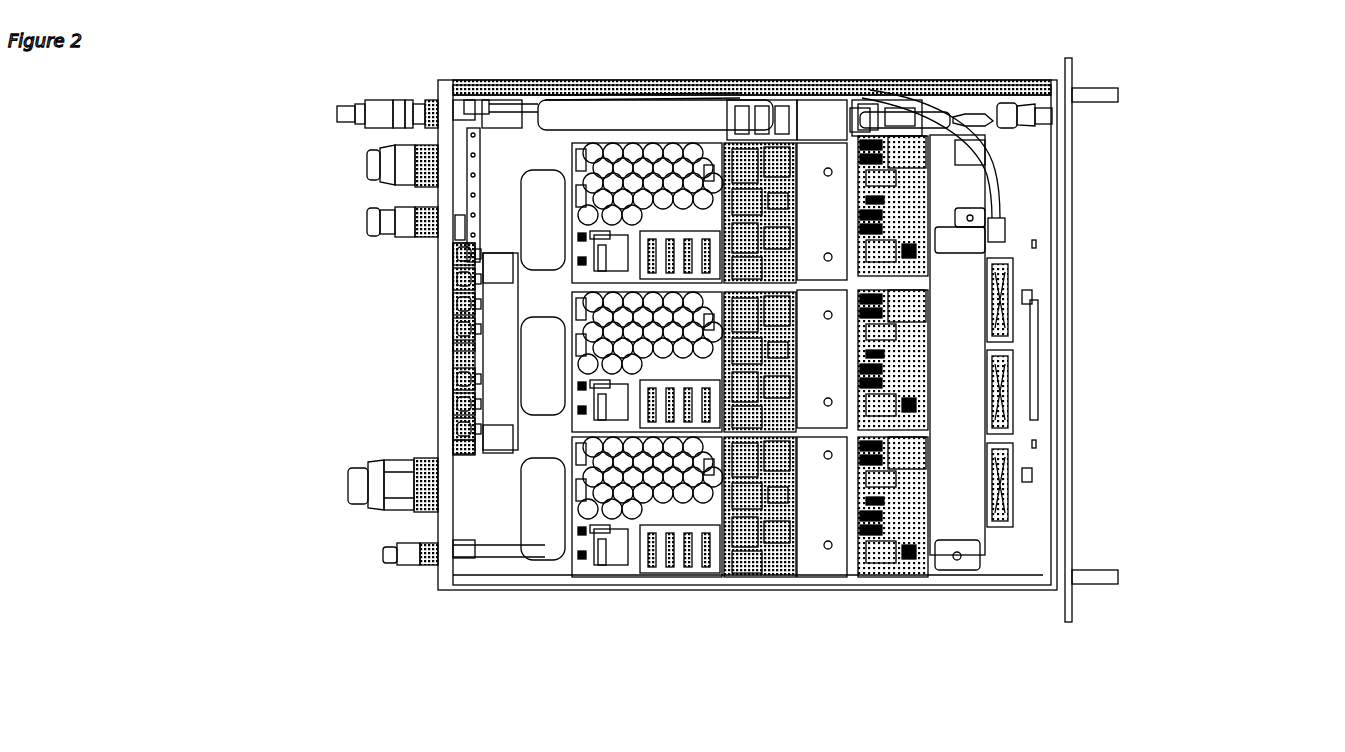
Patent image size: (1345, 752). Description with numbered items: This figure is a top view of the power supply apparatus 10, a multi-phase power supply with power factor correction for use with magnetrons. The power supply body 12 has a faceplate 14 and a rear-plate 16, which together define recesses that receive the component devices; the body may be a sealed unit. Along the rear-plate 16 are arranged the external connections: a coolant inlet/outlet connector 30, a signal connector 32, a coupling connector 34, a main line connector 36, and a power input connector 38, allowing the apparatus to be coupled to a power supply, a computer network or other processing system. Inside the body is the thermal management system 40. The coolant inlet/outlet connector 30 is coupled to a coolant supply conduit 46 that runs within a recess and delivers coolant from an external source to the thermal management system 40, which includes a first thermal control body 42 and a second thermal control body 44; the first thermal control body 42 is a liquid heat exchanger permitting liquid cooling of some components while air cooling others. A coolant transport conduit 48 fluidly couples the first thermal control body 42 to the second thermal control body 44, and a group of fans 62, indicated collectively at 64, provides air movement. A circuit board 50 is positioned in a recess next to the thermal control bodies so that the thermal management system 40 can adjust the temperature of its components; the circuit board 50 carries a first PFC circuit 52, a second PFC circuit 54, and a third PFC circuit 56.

The power supply apparatus 10 is at (1242, 117).
The power supply body 12 is at (1030, 82).
The faceplate 14 is at (1072, 262).
The rear-plate 16 is at (436, 302).
The coolant inlet/outlet connector 30 is at (385, 108).
The signal connector 32 is at (387, 167).
The coupling connector 34 is at (372, 222).
The main line connector 36 is at (367, 474).
The power input connector 38 is at (405, 550).
The thermal management system 40 is at (973, 662).
The first thermal control body 42 is at (950, 497).
The second thermal control body 44 is at (825, 481).
The coolant supply conduit 46 is at (778, 100).
The coolant transport conduit 48 is at (935, 120).
The circuit board 50 is at (508, 147).
The first PFC circuit 52 is at (668, 163).
The second PFC circuit 54 is at (612, 345).
The third PFC circuit 56 is at (612, 495).
The fan 62 is at (1003, 316).
The connector group 64 is at (1180, 327).